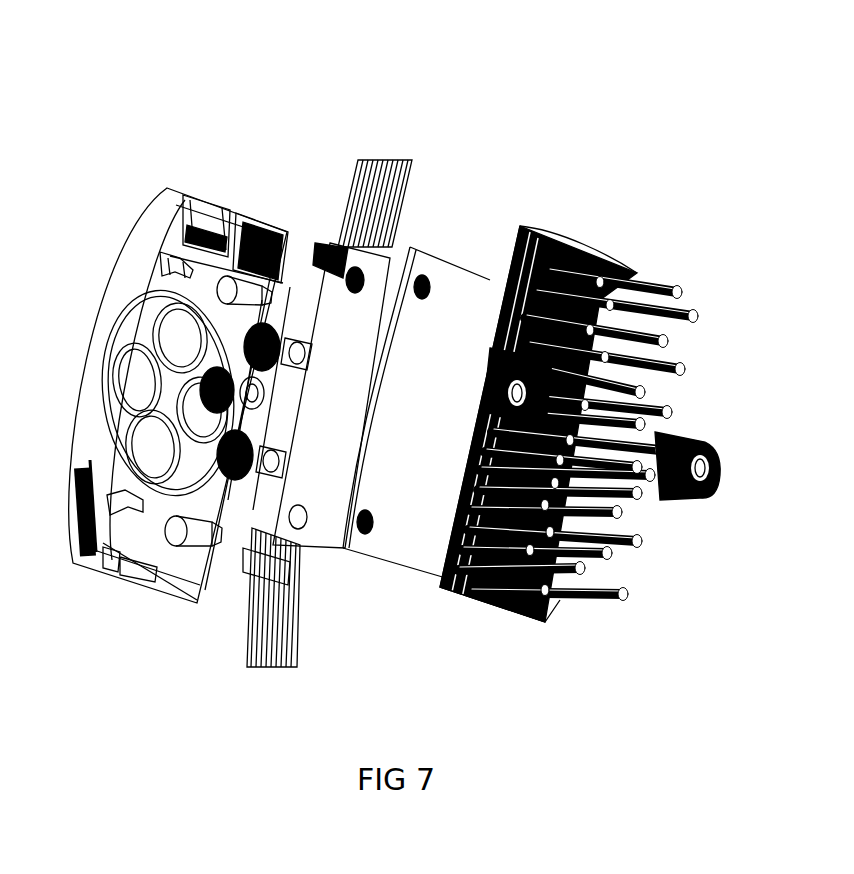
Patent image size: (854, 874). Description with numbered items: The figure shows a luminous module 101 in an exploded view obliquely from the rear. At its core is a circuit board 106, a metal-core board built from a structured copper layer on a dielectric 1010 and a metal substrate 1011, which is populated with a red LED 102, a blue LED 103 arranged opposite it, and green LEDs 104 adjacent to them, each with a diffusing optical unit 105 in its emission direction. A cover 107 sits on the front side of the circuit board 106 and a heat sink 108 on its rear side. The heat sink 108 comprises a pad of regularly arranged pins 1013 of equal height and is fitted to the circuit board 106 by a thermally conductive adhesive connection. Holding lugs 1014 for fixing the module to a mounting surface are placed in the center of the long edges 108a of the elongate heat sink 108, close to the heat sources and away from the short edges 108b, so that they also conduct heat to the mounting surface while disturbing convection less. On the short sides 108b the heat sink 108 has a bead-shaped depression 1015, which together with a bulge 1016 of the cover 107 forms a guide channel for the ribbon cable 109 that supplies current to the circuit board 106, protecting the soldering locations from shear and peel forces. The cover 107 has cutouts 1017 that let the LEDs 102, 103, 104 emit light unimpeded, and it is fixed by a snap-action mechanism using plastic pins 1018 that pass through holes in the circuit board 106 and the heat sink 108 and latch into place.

The luminous module 101 is at (503, 112).
The red LED 102 is at (275, 462).
The blue LED 103 is at (301, 354).
The green LED 104 is at (203, 372).
The diffusing optical unit 105 is at (268, 322).
The circuit board 106 is at (359, 400).
The cover 107 is at (78, 547).
The heat sink 108 is at (530, 617).
The long edge 108a is at (507, 270).
The short edge 108b is at (522, 628).
The ribbon cable 109 is at (385, 158).
The dielectric 1010 is at (382, 576).
The substrate 1011 is at (412, 257).
The pins 1013 is at (677, 290).
The holding lug 1014 is at (485, 395).
The depression 1015 is at (482, 610).
The bulge 1016 is at (215, 218).
The cutout 1017 is at (130, 372).
The plastic pin 1018 is at (237, 275).